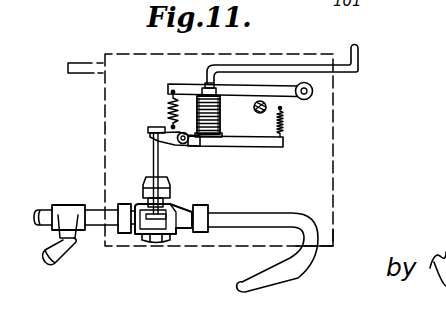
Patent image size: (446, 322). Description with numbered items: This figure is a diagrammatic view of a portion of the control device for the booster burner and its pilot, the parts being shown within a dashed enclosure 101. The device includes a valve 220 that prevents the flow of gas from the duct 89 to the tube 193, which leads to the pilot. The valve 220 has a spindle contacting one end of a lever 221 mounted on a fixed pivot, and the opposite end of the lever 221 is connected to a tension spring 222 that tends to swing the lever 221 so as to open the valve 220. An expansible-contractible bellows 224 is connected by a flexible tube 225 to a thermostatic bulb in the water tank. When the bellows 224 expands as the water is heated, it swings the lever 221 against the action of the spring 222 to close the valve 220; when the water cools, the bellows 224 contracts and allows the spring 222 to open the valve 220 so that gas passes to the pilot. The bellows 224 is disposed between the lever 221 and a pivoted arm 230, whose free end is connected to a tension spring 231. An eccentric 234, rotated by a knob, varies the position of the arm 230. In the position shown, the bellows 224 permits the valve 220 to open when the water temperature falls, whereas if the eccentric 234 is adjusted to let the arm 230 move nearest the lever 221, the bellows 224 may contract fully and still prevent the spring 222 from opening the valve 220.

The control unit enclosure 101 is at (88, 131).
The duct 89 is at (27, 272).
The tube 193 is at (283, 275).
The valve 220 is at (141, 206).
The lever 221 is at (230, 139).
The tension spring 222 is at (283, 123).
The bellows 224 is at (215, 126).
The flexible tube 225 is at (360, 60).
The pivoted arm 230 is at (247, 93).
The tension spring 231 is at (166, 111).
The eccentric 234 is at (253, 106).